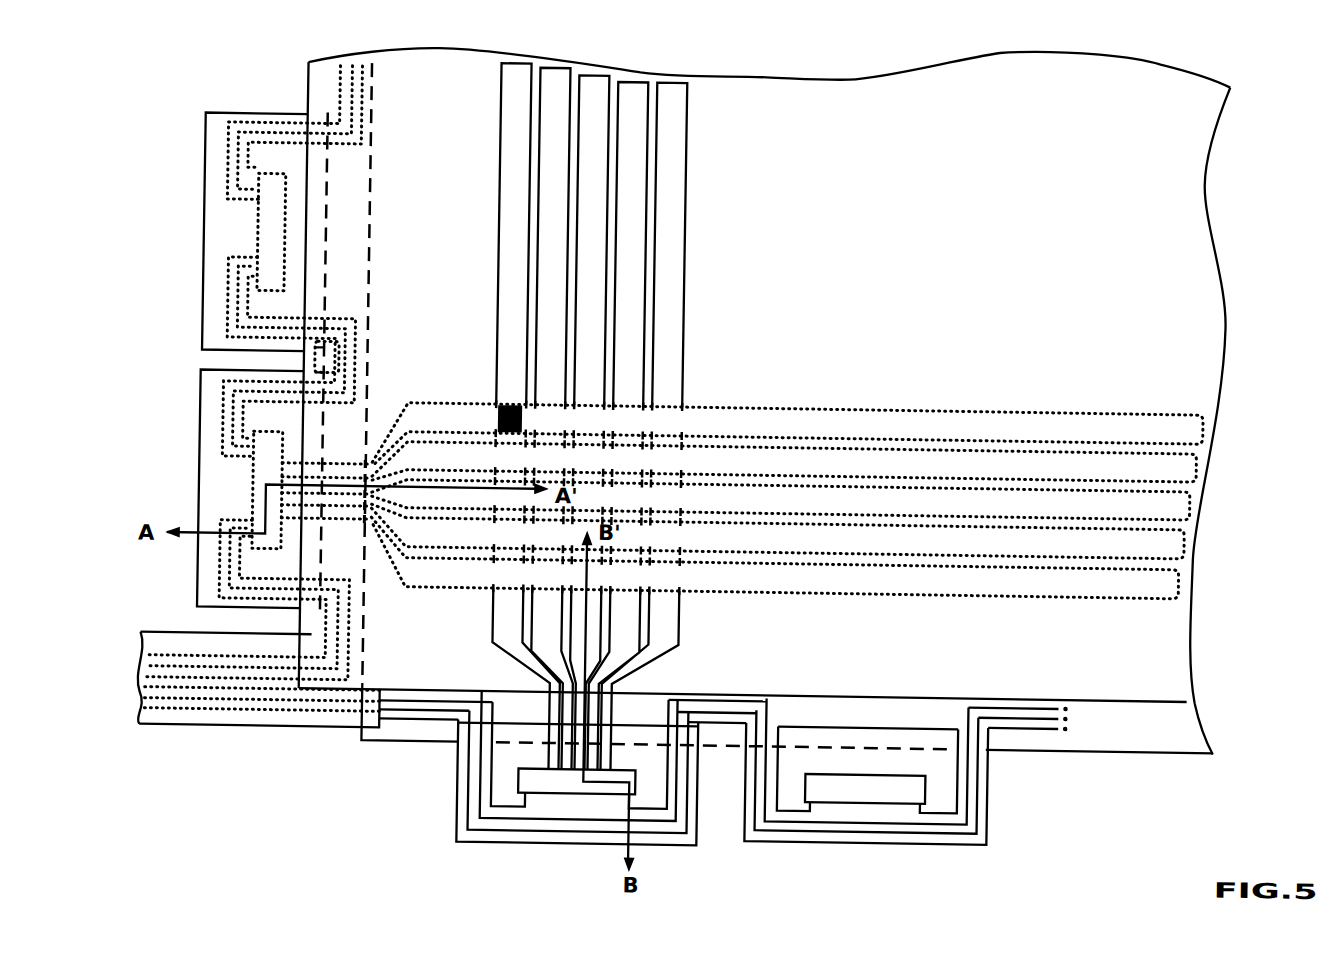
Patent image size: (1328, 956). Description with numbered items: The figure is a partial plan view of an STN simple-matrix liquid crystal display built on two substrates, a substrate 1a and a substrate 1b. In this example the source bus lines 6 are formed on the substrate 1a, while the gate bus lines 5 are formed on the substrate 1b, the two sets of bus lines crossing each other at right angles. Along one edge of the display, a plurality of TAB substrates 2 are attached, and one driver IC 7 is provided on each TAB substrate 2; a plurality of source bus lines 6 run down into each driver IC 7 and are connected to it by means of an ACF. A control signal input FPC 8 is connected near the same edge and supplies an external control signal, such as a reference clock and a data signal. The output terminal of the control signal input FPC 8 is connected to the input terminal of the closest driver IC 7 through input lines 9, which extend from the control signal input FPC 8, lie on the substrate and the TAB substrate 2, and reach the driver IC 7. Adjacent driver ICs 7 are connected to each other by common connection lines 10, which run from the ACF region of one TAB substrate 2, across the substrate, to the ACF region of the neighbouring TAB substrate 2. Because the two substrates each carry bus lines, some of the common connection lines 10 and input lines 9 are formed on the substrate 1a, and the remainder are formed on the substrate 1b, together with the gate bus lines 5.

The substrate 1a is at (1196, 723).
The substrate 1b is at (312, 94).
The TAB substrate 2 is at (449, 773).
The gate bus lines 5 is at (453, 408).
The source bus lines 6 is at (497, 363).
The driver IC 7 is at (264, 231).
The control signal input FPC 8 is at (179, 726).
The input lines 9 is at (332, 626).
The common connection lines 10 is at (318, 358).